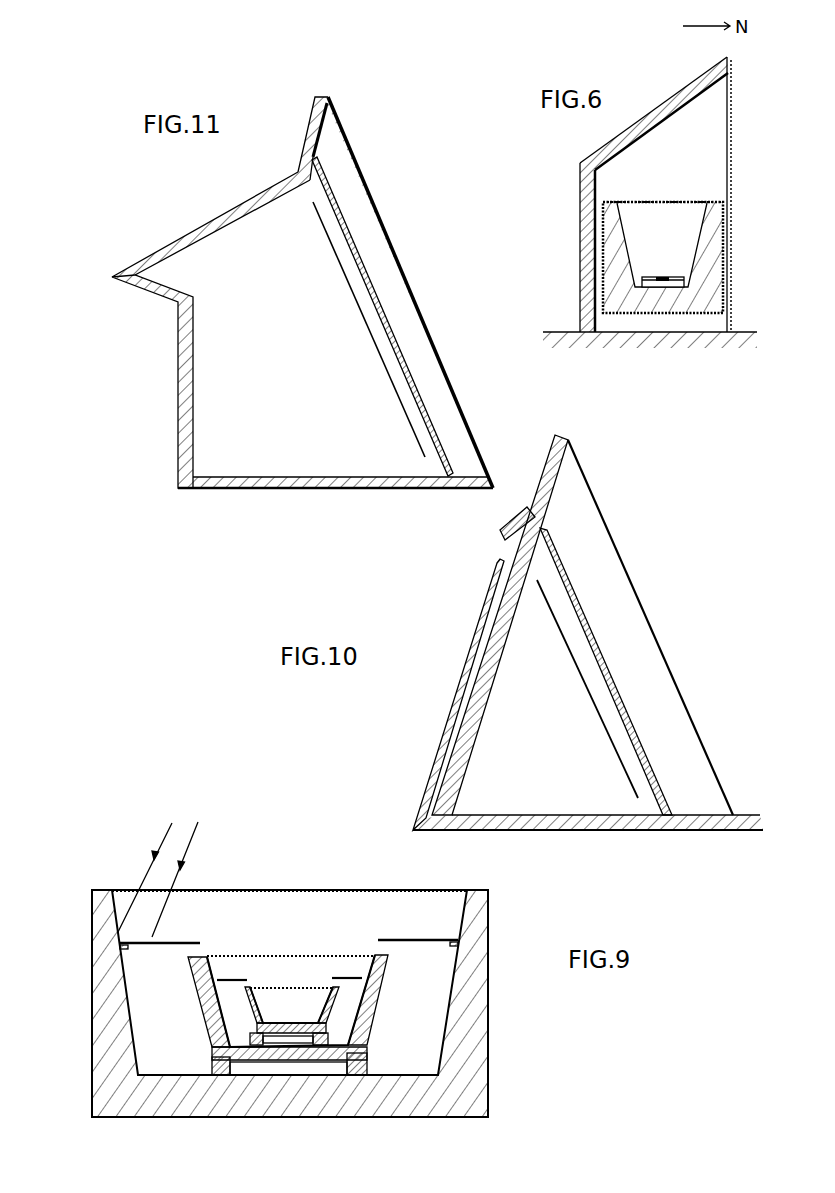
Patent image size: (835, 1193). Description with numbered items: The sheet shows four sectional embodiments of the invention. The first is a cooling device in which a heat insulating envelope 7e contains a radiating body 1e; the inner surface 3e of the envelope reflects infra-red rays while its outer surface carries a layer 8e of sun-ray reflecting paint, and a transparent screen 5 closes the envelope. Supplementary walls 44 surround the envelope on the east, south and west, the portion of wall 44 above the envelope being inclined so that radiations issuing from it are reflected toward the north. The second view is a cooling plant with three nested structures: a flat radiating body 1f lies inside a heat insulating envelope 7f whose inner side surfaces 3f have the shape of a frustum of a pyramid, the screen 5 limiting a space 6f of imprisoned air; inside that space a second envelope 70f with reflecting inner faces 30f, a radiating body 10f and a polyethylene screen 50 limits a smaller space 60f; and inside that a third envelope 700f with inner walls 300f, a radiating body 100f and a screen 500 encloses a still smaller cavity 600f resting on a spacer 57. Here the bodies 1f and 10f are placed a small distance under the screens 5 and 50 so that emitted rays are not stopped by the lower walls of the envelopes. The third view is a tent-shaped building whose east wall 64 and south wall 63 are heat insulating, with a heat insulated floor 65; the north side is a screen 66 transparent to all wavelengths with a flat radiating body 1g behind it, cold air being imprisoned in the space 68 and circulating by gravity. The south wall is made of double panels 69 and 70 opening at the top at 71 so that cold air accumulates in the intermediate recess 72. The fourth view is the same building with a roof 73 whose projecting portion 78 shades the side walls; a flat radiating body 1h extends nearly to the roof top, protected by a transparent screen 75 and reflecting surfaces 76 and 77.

In FIG. 6, the supplementary wall 44 is at (652, 120).
In FIG. 6, the transparent screen 5 is at (643, 196).
In FIG. 9, the transparent screen 5 is at (418, 888).
In FIG. 6, the inner surface 3e is at (697, 237).
In FIG. 6, the radiating body 1e is at (658, 277).
In FIG. 6, the heat insulating envelope 7e is at (613, 293).
In FIG. 6, the layer of paint 8e is at (723, 273).
In FIG. 11, the roof 73 is at (217, 218).
In FIG. 11, the projecting portion 78 is at (128, 273).
In FIG. 11, the reflecting surface 76 is at (325, 127).
In FIG. 11, the transparent screen 75 is at (358, 253).
In FIG. 11, the solar cell element 1h is at (360, 297).
In FIG. 11, the reflecting surface 77 is at (410, 327).
In FIG. 10, the south wall 63 is at (550, 495).
In FIG. 10, the east wall 64 is at (632, 637).
In FIG. 10, the floor 65 is at (558, 818).
In FIG. 10, the screen 66 is at (657, 718).
In FIG. 10, the space 68 is at (547, 757).
In FIG. 10, the panel 69 is at (470, 740).
In FIG. 10, the external panel 70 is at (472, 653).
In FIG. 10, the opening 71 is at (510, 548).
In FIG. 10, the intermediate recess 72 is at (500, 602).
In FIG. 10, the flat radiating body 1g is at (577, 667).
In FIG. 9, the heat insulating envelope 7f is at (107, 1092).
In FIG. 9, the inner side surfaces 3f is at (457, 968).
In FIG. 9, the flat radiating body 1f is at (137, 933).
In FIG. 9, the radiating body 10f is at (225, 1010).
In FIG. 9, the space 6f is at (240, 931).
In FIG. 9, the heat insulating envelope 70f is at (208, 992).
In FIG. 9, the heat insulating envelope 700f is at (253, 1012).
In FIG. 9, the polyethylene screen 50 is at (325, 953).
In FIG. 9, the space 60f is at (252, 980).
In FIG. 9, the inner walls 300f is at (323, 1015).
In FIG. 9, the polyethylene screen 500 is at (290, 985).
In FIG. 9, the radiating body 100f is at (262, 1010).
In FIG. 9, the inner cavity 600f is at (312, 1015).
In FIG. 9, the reflecting inner faces 30f is at (358, 1002).
In FIG. 9, the spacer 57 is at (360, 1077).